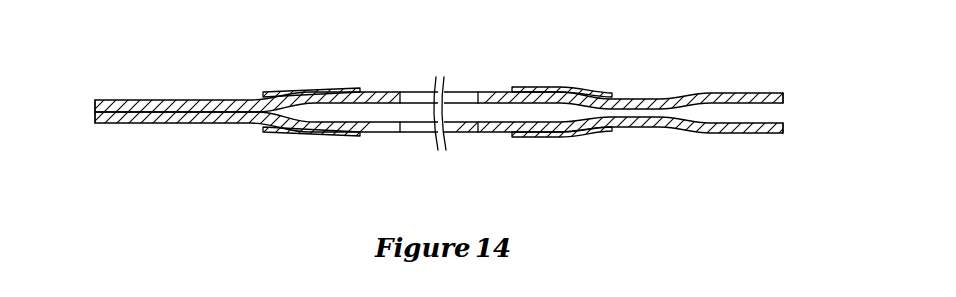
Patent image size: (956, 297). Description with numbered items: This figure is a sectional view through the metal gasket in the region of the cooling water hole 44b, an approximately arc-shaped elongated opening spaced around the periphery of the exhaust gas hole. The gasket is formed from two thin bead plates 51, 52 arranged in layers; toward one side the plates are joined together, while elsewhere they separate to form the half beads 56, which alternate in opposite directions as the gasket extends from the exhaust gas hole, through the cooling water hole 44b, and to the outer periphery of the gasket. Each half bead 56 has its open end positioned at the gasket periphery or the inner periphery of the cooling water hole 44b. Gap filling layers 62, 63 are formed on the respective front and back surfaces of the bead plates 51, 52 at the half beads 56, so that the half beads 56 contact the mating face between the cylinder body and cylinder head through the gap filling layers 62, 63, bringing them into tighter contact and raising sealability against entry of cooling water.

The bead plate 51 is at (737, 94).
The bead plate 52 is at (716, 131).
The half bead 56 is at (287, 64).
The gap filling layer 62 is at (333, 89).
The gap filling layer 63 is at (540, 87).
The cooling water hole 44b is at (472, 91).